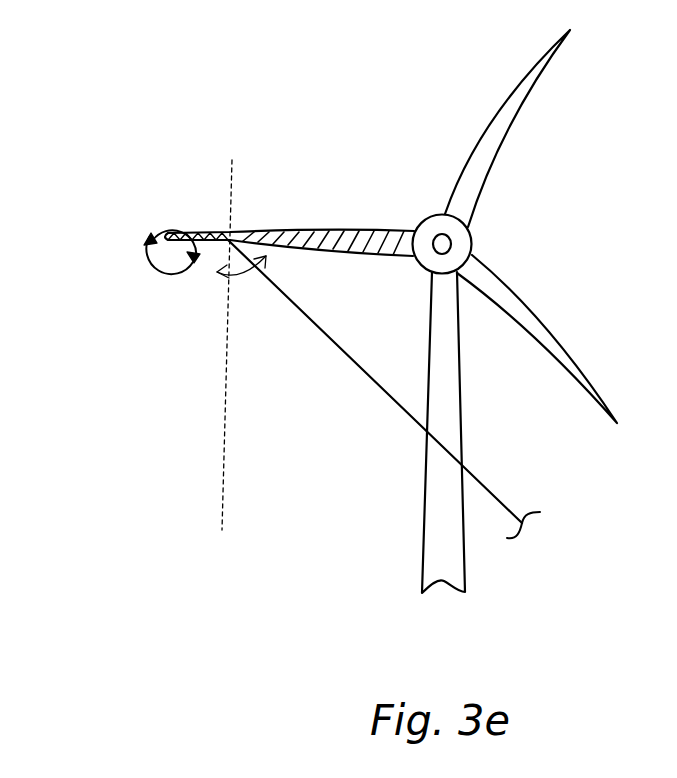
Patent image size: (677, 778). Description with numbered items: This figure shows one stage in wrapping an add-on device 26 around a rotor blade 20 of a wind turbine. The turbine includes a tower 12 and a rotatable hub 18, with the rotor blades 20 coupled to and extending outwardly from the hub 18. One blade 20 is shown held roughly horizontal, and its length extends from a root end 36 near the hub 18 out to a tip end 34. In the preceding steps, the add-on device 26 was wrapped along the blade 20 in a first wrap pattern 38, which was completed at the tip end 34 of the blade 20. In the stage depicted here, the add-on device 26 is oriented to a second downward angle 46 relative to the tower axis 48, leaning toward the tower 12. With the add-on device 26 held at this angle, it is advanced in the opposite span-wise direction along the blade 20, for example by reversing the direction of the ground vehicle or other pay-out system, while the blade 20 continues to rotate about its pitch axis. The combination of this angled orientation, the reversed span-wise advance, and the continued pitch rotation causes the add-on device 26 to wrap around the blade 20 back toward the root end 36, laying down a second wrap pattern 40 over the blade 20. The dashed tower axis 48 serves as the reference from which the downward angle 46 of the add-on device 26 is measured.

The tower 12 is at (462, 428).
The rotatable hub 18 is at (474, 236).
The rotor blade 20 is at (502, 123).
The add-on device 26 is at (375, 382).
The tip end 34 is at (168, 235).
The root end 36 is at (416, 256).
The first wrap pattern 38 is at (380, 236).
The second wrap pattern 40 is at (210, 229).
The second downward angle 46 is at (249, 273).
The tower axis 48 is at (226, 346).